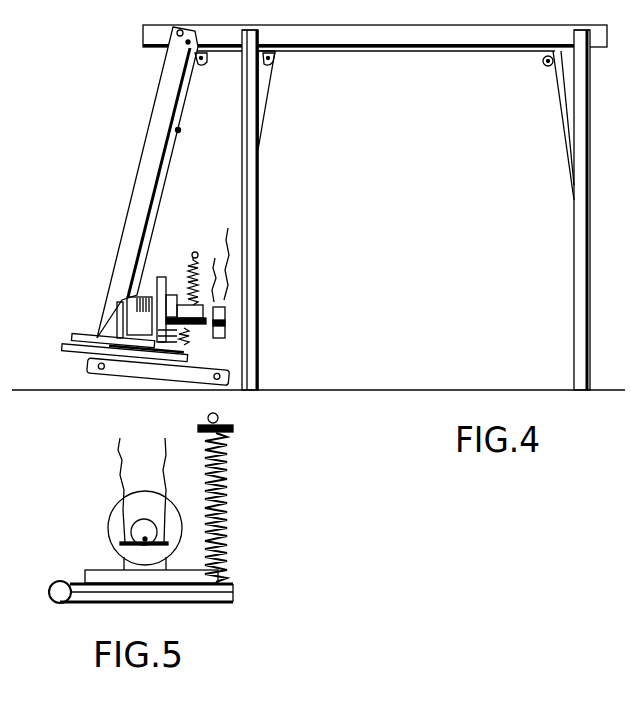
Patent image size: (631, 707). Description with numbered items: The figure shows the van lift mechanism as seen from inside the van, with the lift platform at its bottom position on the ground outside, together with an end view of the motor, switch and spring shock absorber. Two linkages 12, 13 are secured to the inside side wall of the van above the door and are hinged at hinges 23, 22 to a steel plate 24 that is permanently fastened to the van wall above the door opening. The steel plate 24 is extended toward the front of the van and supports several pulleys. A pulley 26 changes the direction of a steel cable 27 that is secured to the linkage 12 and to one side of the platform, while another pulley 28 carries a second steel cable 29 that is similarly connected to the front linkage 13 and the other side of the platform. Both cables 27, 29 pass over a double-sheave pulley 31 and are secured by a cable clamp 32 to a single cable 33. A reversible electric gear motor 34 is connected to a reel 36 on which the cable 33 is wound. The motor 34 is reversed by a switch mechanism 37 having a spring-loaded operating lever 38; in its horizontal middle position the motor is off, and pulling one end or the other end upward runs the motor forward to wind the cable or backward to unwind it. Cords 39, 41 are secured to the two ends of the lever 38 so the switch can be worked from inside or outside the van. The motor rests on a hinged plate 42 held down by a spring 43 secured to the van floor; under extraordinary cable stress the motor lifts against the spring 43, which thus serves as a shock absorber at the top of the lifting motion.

In FIG. 4, the linkage 12 is at (575, 210).
In FIG. 4, the front linkage 13 is at (258, 213).
In FIG. 4, the hinge 22 is at (259, 33).
In FIG. 4, the hinge 23 is at (568, 33).
In FIG. 4, the steel plate 24 is at (467, 32).
In FIG. 4, the pulley 26 is at (543, 63).
In FIG. 4, the steel cable 27 is at (561, 108).
In FIG. 4, the pulley 28 is at (272, 63).
In FIG. 4, the steel cable 29 is at (267, 107).
In FIG. 4, the double-sheave pulley 31 is at (201, 67).
In FIG. 4, the cable clamp 32 is at (180, 130).
In FIG. 4, the single cable 33 is at (167, 183).
In FIG. 4, the reversible electric gear motor 34 is at (185, 308).
In FIG. 4, the reel 36 is at (138, 305).
In FIG. 4, the switch mechanism 37 is at (226, 327).
In FIG. 5, the switch mechanism 37 is at (137, 528).
In FIG. 5, the spring-loaded operating lever 38 is at (120, 546).
In FIG. 4, the cord 39 is at (215, 258).
In FIG. 5, the cord 39 is at (120, 440).
In FIG. 4, the cord 41 is at (228, 228).
In FIG. 5, the cord 41 is at (173, 427).
In FIG. 4, the hinged plate 42 is at (77, 343).
In FIG. 5, the hinged plate 42 is at (185, 592).
In FIG. 4, the spring 43 is at (190, 282).
In FIG. 5, the spring 43 is at (222, 482).